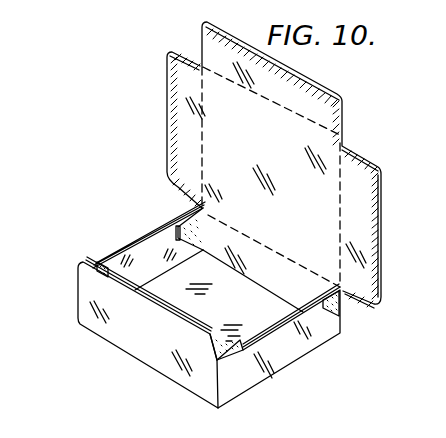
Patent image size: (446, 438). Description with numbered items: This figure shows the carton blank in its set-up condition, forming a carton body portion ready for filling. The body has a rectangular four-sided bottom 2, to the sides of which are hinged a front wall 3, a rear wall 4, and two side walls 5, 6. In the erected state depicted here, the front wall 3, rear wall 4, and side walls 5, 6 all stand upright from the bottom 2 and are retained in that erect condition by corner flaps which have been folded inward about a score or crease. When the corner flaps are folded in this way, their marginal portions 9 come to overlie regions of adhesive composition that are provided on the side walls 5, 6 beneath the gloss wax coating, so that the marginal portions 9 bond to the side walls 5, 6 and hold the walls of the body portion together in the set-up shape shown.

The bottom 2 is at (210, 318).
The front wall 3 is at (148, 356).
The rear wall 4 is at (273, 286).
The side wall 5 is at (155, 250).
The side wall 6 is at (286, 356).
The marginal portion 9 is at (208, 216).